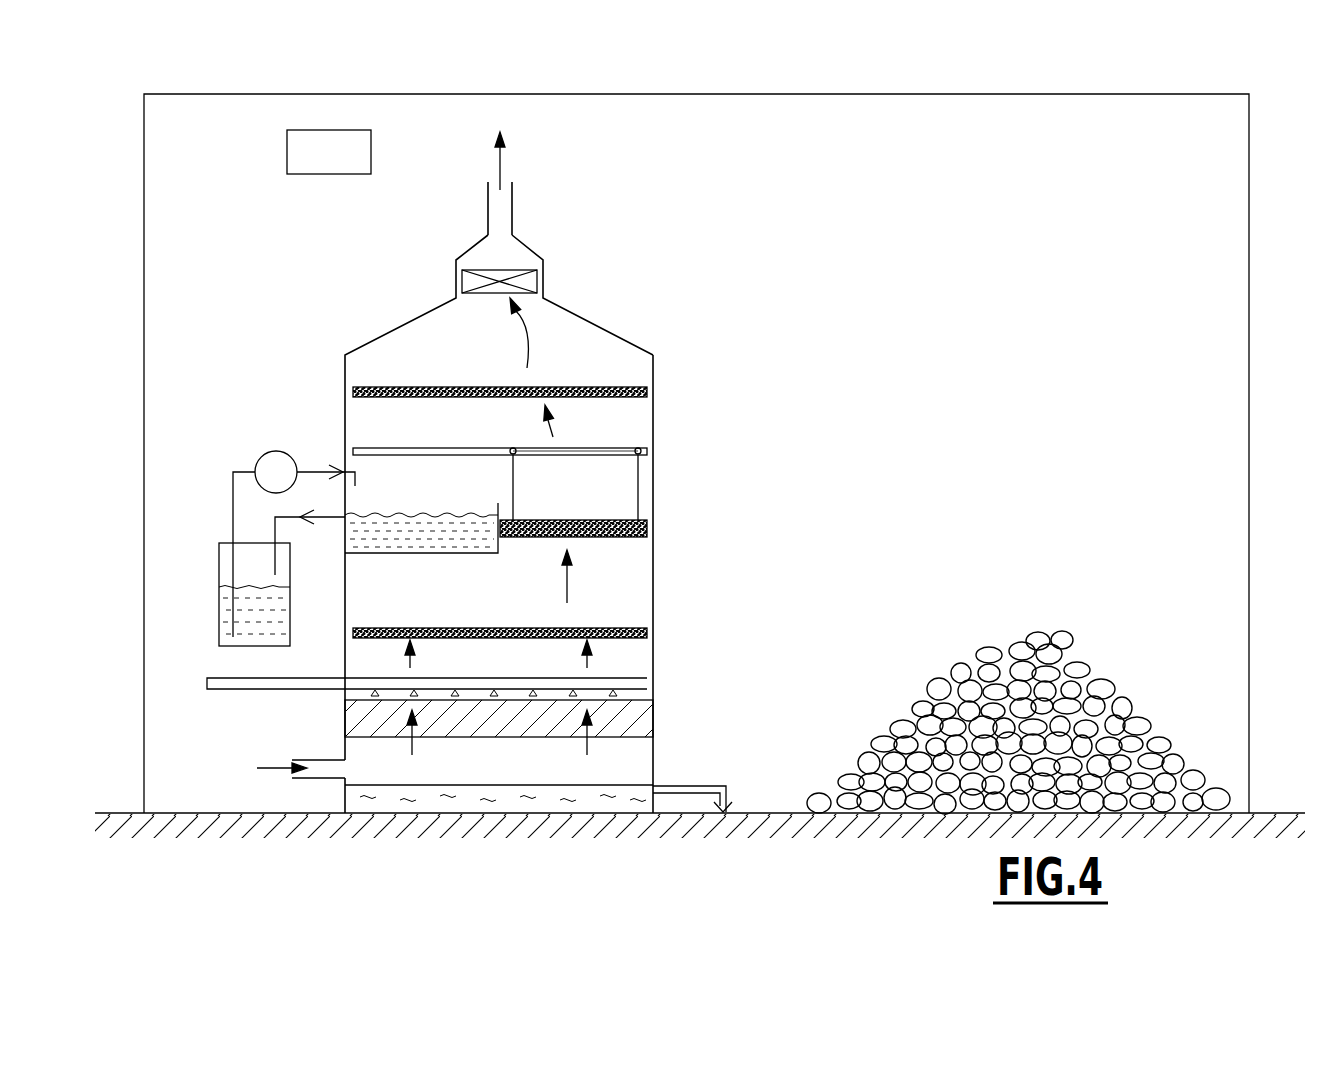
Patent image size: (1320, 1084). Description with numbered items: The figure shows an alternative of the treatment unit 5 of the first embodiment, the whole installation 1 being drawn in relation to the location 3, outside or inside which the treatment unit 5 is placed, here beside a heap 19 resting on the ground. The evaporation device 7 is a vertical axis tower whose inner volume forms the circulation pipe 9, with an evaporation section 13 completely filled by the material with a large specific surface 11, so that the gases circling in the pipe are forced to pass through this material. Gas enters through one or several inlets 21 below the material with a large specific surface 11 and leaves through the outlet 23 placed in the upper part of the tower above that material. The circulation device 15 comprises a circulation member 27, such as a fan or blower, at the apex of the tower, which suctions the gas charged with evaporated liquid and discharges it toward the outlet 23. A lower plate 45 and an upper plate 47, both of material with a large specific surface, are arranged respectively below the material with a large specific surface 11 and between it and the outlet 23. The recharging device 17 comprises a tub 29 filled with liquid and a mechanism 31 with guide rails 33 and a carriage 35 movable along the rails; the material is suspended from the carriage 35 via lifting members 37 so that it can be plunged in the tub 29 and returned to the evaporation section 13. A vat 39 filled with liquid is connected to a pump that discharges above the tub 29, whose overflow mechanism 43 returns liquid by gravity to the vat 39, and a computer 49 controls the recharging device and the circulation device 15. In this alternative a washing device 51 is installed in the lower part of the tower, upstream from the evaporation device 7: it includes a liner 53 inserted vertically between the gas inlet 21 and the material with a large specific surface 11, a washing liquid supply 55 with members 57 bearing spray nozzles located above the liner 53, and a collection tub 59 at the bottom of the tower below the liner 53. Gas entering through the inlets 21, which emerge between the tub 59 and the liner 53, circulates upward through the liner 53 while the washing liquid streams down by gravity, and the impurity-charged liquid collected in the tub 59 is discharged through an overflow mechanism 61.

The treatment installation 1 is at (264, 237).
The location 3 is at (1250, 228).
The treatment unit 5 is at (300, 342).
The evaporation device 7 is at (675, 352).
The circulation pipe 9 is at (635, 596).
The material with a large specific surface 11 is at (648, 530).
The evaporation section 13 is at (653, 562).
The circulation device 15 is at (511, 258).
The recharging device 17 is at (444, 588).
The pile of material 19 is at (1063, 630).
The inlet 21 is at (345, 763).
The outlet 23 is at (497, 212).
The circulation member 27 is at (457, 277).
The tub 29 is at (385, 556).
The mechanism 31 is at (552, 460).
The guide rails 33 is at (382, 434).
The carriage 35 is at (590, 448).
The lifting members 37 is at (512, 448).
The vat 39 is at (219, 560).
The overflow mechanism 43 is at (345, 510).
The lower plate 45 is at (640, 630).
The upper plate 47 is at (648, 395).
The computer 49 is at (329, 152).
The washing device 51 is at (523, 749).
The liner 53 is at (360, 710).
The washing liquid supply 55 is at (468, 668).
The member 57 is at (522, 680).
The collection tub 59 is at (352, 798).
The overflow mechanism 61 is at (268, 451).